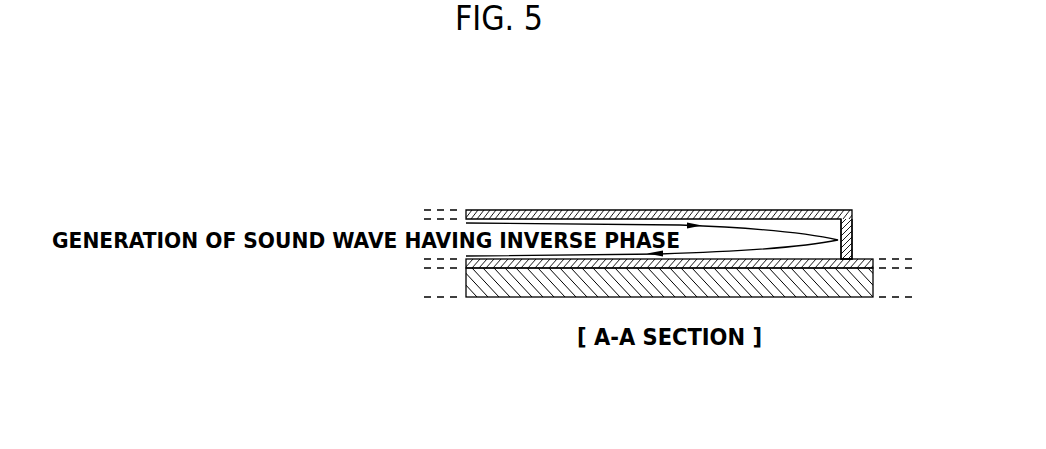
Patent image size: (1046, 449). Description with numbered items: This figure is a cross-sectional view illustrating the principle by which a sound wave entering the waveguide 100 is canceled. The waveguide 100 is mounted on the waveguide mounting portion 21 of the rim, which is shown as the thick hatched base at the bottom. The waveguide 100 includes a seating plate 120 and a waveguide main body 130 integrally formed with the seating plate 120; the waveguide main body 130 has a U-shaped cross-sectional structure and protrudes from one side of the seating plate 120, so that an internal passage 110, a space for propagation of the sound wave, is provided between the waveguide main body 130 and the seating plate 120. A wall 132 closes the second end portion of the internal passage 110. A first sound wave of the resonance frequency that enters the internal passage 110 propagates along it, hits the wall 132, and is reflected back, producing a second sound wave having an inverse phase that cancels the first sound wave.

The waveguide 100 is at (567, 200).
The internal passage 110 is at (722, 238).
The seating plate 120 is at (794, 268).
The waveguide main body 130 is at (808, 212).
The wall 132 is at (852, 240).
The waveguide mounting portion 21 is at (855, 276).